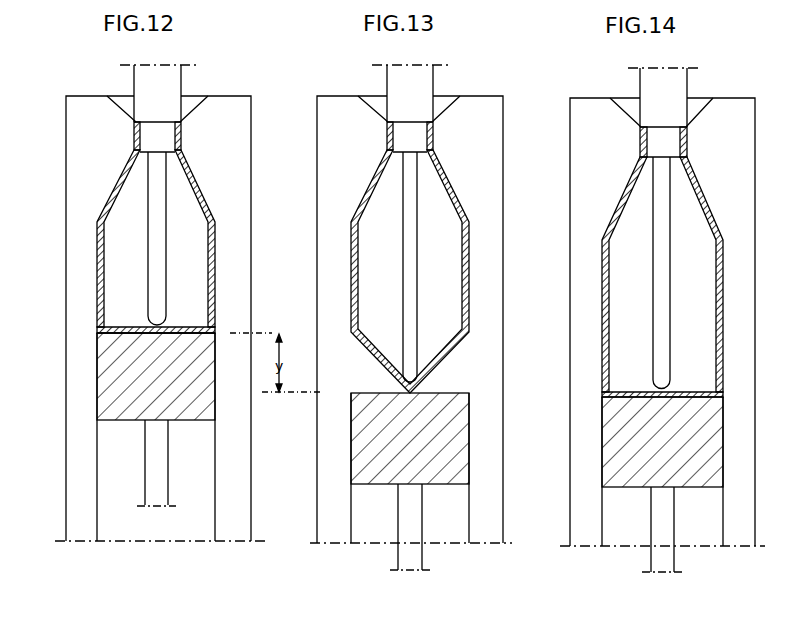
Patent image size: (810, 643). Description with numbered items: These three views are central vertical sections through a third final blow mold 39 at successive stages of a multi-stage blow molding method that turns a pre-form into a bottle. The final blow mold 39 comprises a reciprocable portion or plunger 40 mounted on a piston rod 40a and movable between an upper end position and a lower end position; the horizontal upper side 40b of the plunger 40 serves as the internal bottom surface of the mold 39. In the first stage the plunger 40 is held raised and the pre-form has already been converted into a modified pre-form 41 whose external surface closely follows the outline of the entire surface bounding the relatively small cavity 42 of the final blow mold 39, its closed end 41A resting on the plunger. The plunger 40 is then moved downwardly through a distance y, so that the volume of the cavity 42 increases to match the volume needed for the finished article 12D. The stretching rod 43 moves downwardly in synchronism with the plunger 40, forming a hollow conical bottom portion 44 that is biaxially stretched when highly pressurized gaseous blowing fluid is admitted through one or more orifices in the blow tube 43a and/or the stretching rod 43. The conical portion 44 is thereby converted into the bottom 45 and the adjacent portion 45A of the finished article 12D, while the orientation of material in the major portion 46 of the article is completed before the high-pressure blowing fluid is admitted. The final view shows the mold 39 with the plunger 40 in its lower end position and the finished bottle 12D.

In FIG. 12, the final blow mold 39 is at (66, 181).
In FIG. 12, the modified pre-form 41 is at (200, 188).
In FIG. 12, the closed end 41A is at (120, 326).
In FIG. 12, the cavity 42 is at (208, 278).
In FIG. 12, the plunger 40 is at (110, 382).
In FIG. 13, the plunger 40 is at (360, 450).
In FIG. 12, the horizontal upper side of the plunger 40b is at (178, 333).
In FIG. 12, the piston rod 40a is at (145, 478).
In FIG. 13, the blow tube 43a is at (418, 85).
In FIG. 13, the stretching rod 43 is at (410, 281).
In FIG. 13, the hollow conical bottom portion 44 is at (440, 370).
In FIG. 14, the finished article 12D is at (724, 258).
In FIG. 14, the major portion of the article 46 is at (606, 300).
In FIG. 14, the adjacent portion of the finished article 45A is at (724, 397).
In FIG. 14, the bottom of the finished article 45 is at (625, 402).